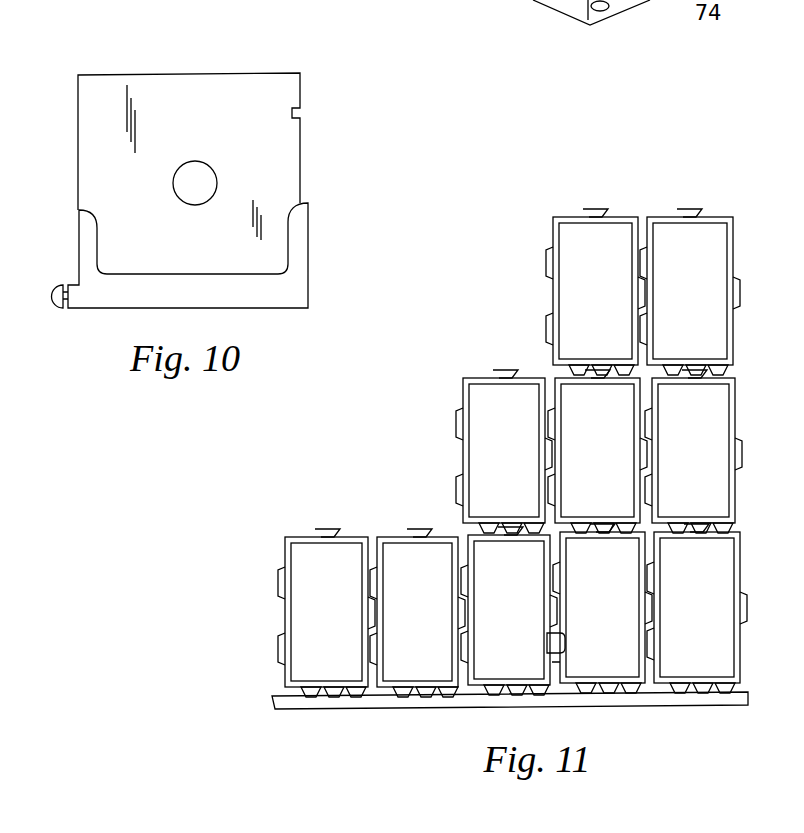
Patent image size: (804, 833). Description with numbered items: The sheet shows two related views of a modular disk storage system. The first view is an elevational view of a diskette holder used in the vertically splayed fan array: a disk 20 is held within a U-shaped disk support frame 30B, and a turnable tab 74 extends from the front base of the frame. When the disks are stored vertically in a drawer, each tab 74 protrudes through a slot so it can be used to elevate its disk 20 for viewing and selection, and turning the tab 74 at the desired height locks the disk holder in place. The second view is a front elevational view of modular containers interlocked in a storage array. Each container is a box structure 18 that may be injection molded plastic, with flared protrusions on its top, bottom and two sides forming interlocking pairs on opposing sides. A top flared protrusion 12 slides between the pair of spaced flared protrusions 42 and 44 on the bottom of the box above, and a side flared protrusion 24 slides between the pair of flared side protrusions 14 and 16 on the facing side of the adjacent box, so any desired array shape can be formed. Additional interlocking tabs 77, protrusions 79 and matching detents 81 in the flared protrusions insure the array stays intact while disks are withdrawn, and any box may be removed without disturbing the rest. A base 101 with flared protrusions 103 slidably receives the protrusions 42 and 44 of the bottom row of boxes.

In FIG. 10, the disk 20 is at (147, 82).
In FIG. 10, the U-shaped disk support frame 30B is at (307, 256).
In FIG. 10, the turnable tab 74 is at (54, 285).
In FIG. 11, the top flared protrusion 12 is at (592, 208).
In FIG. 11, the flared side protrusion 14 is at (546, 268).
In FIG. 11, the flared side protrusion 16 is at (547, 333).
In FIG. 11, the box structure 18 is at (642, 212).
In FIG. 11, the side flared protrusion 24 is at (738, 297).
In FIG. 11, the protrusion 79 is at (458, 486).
In FIG. 11, the detent 81 is at (736, 485).
In FIG. 11, the flared protrusion 44 is at (313, 688).
In FIG. 11, the flared protrusion 42 is at (357, 690).
In FIG. 11, the interlocking tab 77 is at (547, 648).
In FIG. 11, the base 101 is at (345, 705).
In FIG. 11, the flared protrusion 103 is at (378, 697).